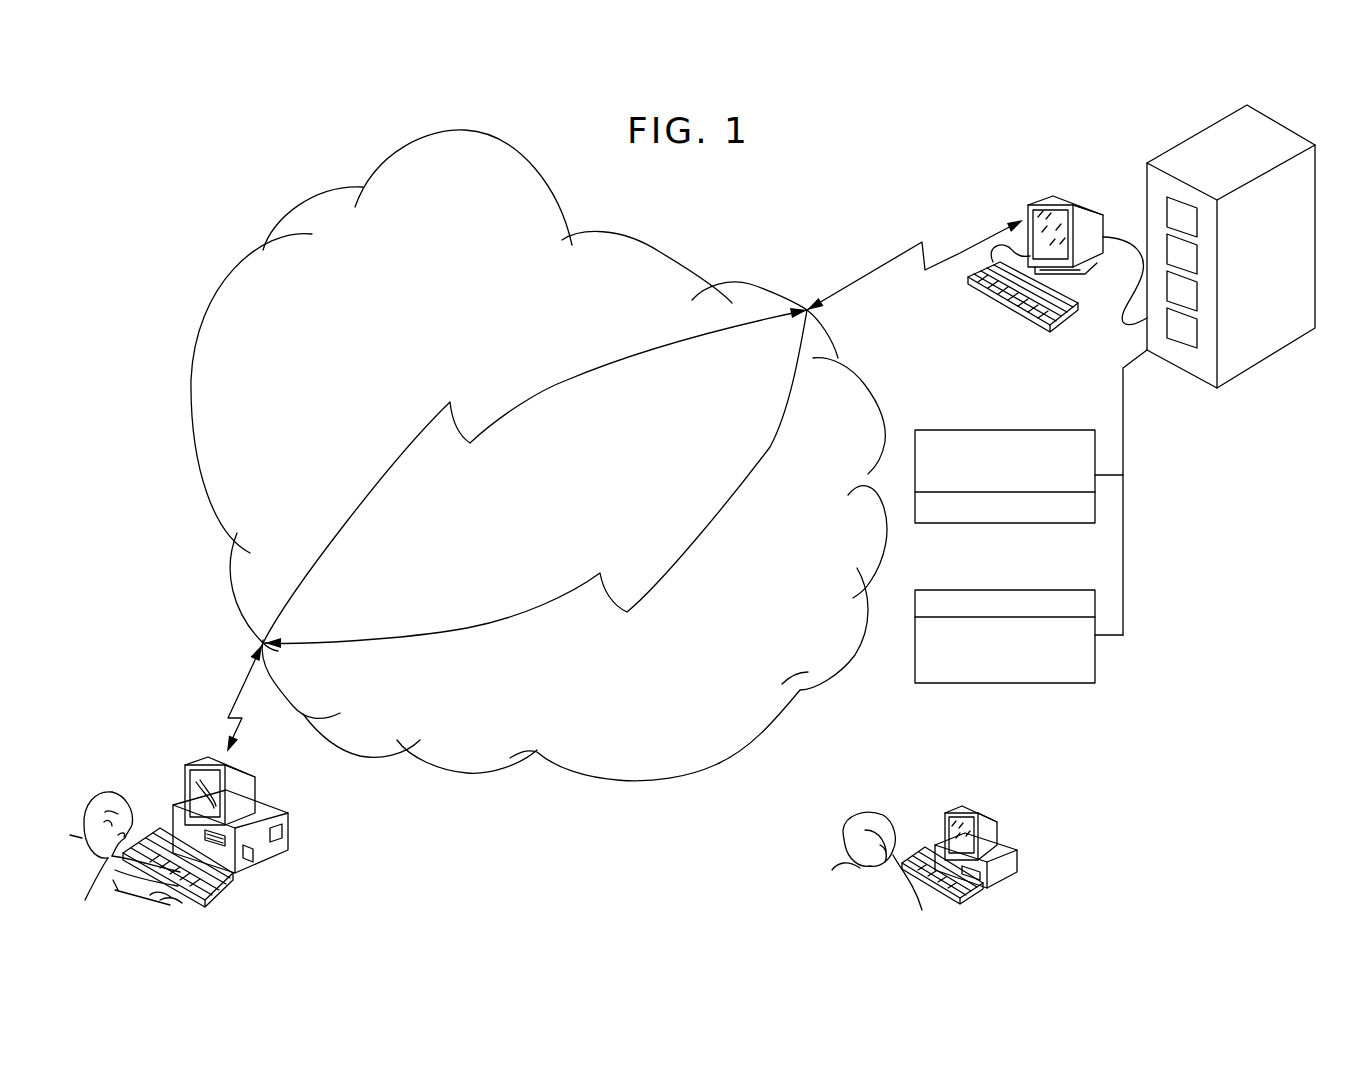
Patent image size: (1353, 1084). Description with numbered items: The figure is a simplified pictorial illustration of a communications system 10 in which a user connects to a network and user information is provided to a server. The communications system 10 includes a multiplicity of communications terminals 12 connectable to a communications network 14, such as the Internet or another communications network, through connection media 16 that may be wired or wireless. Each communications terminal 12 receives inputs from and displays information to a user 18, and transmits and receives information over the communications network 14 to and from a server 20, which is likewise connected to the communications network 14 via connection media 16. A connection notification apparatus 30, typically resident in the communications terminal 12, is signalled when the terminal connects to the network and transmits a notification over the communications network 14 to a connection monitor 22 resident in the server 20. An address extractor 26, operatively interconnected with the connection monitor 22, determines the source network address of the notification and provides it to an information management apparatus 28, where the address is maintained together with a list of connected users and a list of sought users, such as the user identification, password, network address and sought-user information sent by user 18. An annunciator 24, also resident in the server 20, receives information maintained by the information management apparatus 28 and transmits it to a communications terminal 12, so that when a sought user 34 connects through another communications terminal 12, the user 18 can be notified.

The communications system 10 is at (150, 187).
The communications terminal 12 is at (193, 760).
The communications network 14 is at (433, 133).
The connection media 16 is at (888, 256).
The user 18 is at (120, 795).
The server 20 is at (950, 173).
The connection monitor 22 is at (1190, 222).
The annunciator 24 is at (1188, 257).
The address extractor 26 is at (1188, 295).
The information management apparatus 28 is at (1188, 337).
The connection notification apparatus 30 is at (248, 858).
The user 34 is at (870, 826).